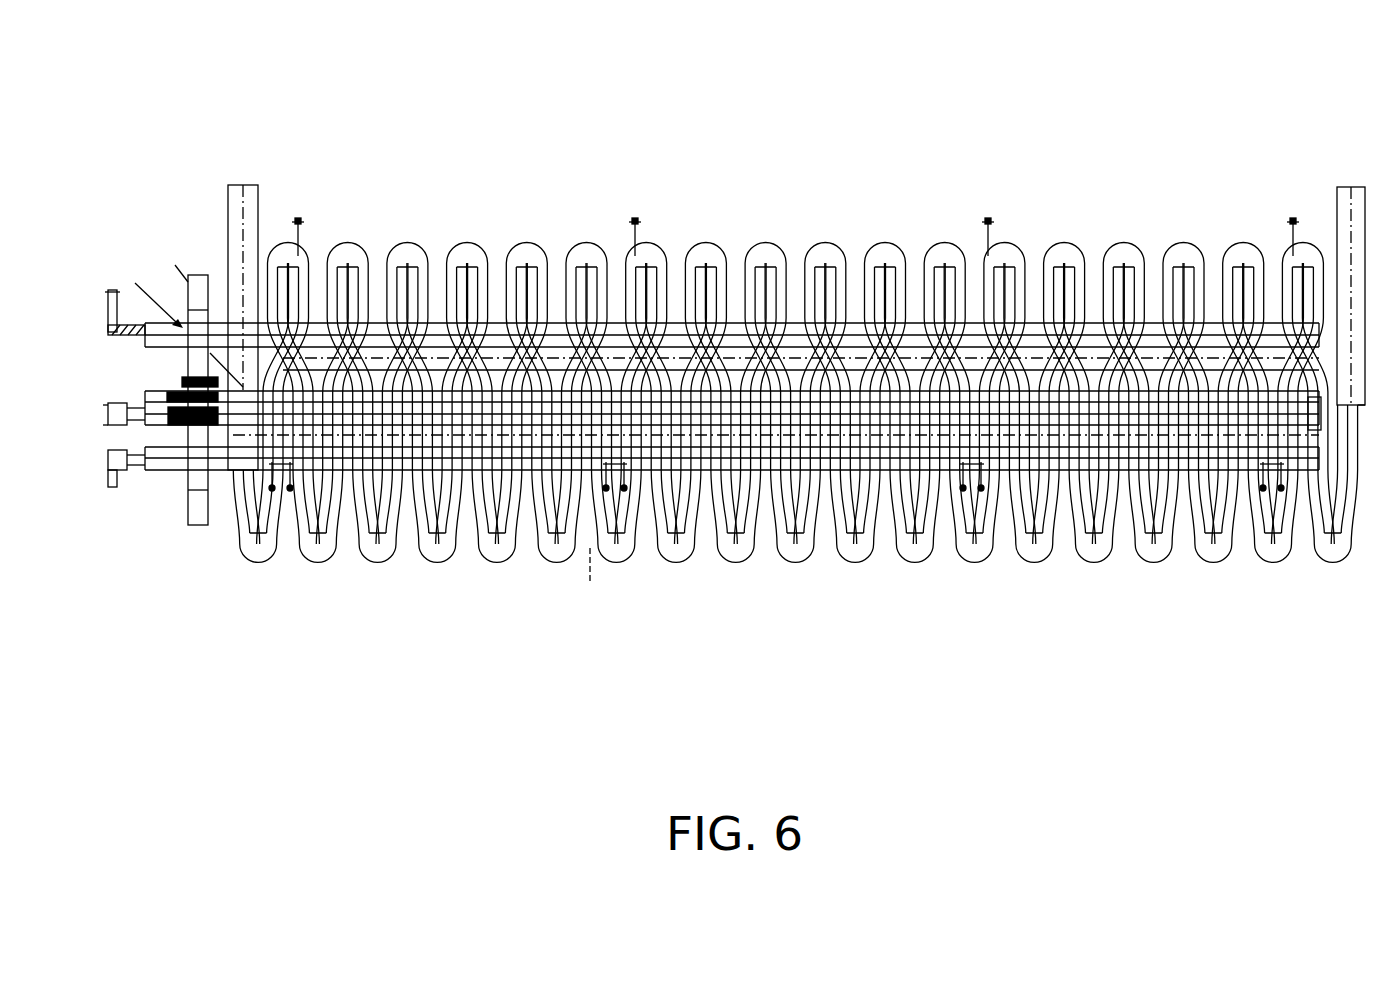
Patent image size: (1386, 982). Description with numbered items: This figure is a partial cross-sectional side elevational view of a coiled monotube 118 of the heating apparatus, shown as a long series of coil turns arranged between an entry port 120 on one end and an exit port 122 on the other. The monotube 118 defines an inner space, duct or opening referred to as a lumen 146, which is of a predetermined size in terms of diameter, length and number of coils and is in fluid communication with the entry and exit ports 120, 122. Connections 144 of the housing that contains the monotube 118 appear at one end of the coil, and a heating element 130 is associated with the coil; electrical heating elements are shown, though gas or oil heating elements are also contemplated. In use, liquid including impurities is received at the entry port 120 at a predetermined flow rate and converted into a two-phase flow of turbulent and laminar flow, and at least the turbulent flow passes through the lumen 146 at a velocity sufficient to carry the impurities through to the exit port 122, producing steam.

The monotube 118 is at (538, 168).
The entry port 120 is at (243, 186).
The exit port 122 is at (1360, 187).
The heating element 130 is at (792, 235).
The connections 144 is at (162, 371).
The lumen 146 is at (545, 543).